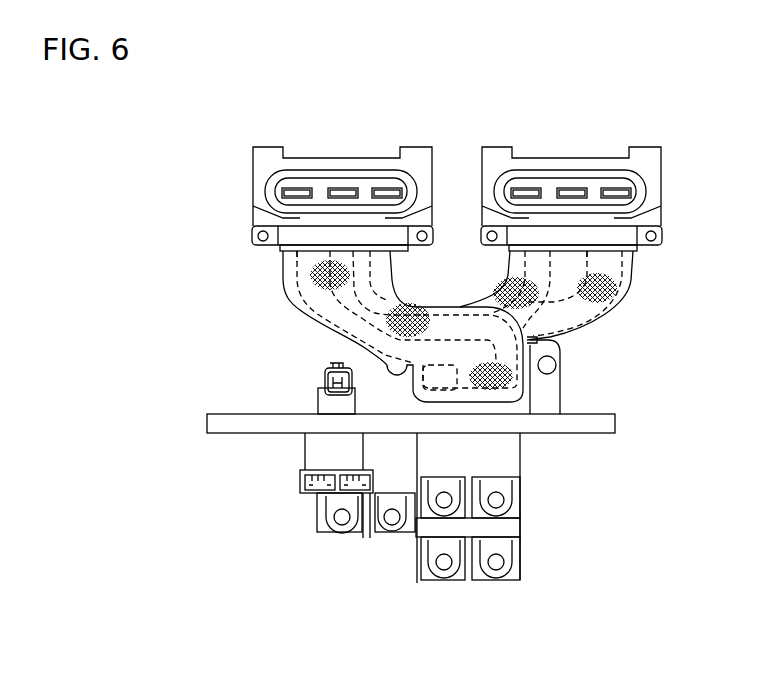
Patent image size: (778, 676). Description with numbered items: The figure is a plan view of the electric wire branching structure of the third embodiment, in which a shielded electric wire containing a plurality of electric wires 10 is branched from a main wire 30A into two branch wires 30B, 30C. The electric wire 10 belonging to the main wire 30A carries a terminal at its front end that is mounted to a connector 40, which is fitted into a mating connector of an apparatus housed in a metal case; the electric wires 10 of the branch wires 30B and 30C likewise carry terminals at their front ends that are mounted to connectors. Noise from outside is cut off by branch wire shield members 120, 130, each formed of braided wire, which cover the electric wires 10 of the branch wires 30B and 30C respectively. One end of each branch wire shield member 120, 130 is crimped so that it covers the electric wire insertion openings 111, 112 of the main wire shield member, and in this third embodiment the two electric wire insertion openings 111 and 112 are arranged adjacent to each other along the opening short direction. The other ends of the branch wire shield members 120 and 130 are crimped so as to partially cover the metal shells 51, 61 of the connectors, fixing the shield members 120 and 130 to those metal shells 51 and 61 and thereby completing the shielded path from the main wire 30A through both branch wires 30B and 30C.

The metal shell 51 is at (340, 163).
The metal shell 61 is at (580, 163).
The main wire 30A is at (536, 413).
The branch wire 30B is at (258, 259).
The branch wire 30C is at (477, 272).
The electric wire 10 is at (283, 282).
The branch wire shield member 120 is at (300, 310).
The branch wire shield member 130 is at (620, 298).
The electric wire insertion opening 111 is at (530, 383).
The electric wire insertion opening 112 is at (540, 338).
The connector 40 is at (308, 520).